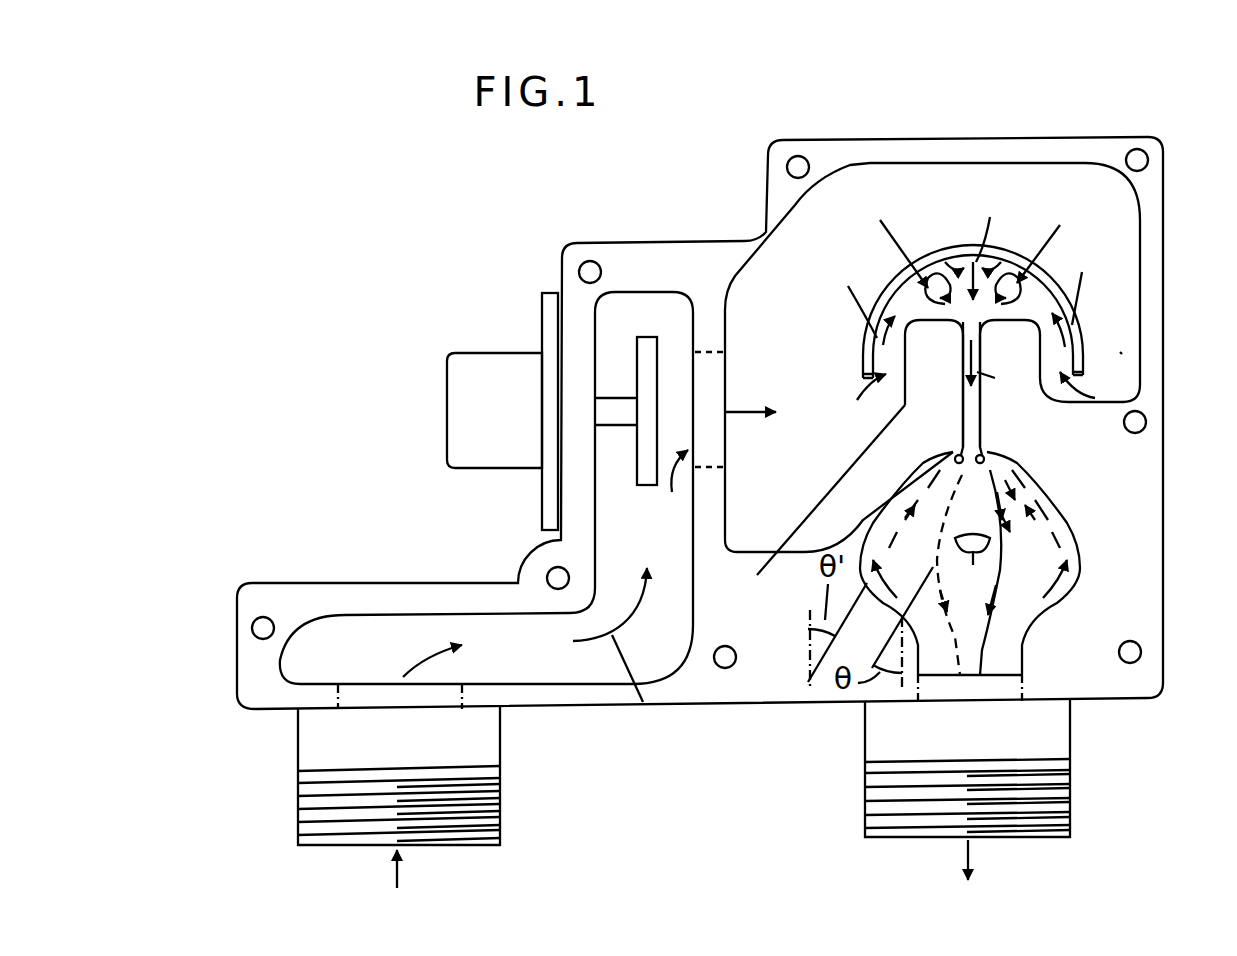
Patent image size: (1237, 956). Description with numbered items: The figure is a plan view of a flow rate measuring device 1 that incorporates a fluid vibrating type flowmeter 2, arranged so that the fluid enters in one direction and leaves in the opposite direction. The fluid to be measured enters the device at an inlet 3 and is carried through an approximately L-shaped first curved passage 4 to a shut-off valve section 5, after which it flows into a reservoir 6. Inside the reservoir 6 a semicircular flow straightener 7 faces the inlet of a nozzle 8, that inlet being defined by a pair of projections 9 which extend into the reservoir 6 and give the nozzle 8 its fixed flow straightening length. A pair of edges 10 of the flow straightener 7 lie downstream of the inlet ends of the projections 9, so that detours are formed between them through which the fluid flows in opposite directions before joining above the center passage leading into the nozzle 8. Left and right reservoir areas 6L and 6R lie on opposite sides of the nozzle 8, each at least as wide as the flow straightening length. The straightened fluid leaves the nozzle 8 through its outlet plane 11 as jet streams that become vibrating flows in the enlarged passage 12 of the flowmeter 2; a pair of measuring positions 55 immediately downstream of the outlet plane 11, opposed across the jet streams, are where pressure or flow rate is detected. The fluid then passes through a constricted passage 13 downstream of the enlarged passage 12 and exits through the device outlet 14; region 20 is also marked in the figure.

The flow rate measuring device 1 is at (698, 212).
The fluid vibrating type flowmeter 2 is at (1100, 582).
The inlet 3 is at (312, 747).
The first curved passage 4 is at (567, 663).
The shut-off valve section 5 is at (637, 332).
The reservoir 6 is at (777, 292).
The left reservoir area 6L is at (812, 501).
The right reservoir area 6R is at (1124, 352).
The flow straightener 7 is at (943, 252).
The nozzle 8 is at (975, 408).
The projections 9 is at (903, 408).
The edges 10 is at (862, 377).
The outlet plane 11 is at (963, 445).
The enlarged passage 12 is at (1048, 560).
The constricted passage 13 is at (1000, 663).
The device outlet 14 is at (878, 740).
The vortex region 20 is at (973, 566).
The measuring positions 55 is at (956, 454).